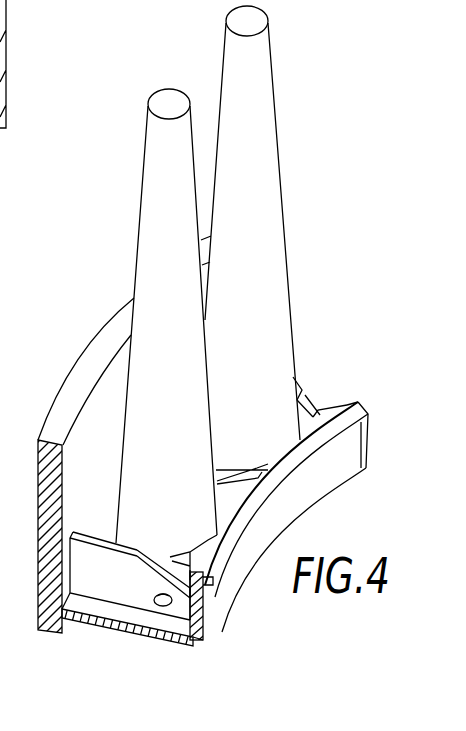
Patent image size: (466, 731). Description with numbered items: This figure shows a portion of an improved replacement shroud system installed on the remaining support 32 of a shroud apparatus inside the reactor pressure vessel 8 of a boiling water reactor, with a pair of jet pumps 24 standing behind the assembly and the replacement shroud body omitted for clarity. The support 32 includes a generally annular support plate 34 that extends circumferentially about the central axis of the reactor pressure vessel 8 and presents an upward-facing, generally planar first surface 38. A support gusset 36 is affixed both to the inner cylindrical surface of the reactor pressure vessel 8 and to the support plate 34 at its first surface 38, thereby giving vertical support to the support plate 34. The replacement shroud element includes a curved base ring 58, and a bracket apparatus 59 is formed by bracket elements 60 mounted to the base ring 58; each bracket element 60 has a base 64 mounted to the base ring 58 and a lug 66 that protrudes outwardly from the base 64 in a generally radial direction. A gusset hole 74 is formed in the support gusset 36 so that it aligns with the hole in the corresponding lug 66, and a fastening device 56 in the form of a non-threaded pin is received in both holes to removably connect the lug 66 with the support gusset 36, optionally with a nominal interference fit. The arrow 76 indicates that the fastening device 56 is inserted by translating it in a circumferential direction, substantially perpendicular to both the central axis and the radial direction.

The reactor pressure vessel 8 is at (37, 488).
The jet pumps 24 is at (158, 190).
The support 32 is at (110, 638).
The support plate 34 is at (95, 623).
The support gussets 36 is at (300, 385).
The first surface 38 is at (70, 603).
The fastening devices 56 is at (193, 640).
The base ring 58 is at (372, 447).
The bracket apparatus 59 is at (349, 397).
The bracket elements 60 is at (327, 400).
The base 64 is at (265, 470).
The lug 66 is at (233, 453).
The gusset hole 74 is at (158, 597).
The arrow 76 is at (160, 612).